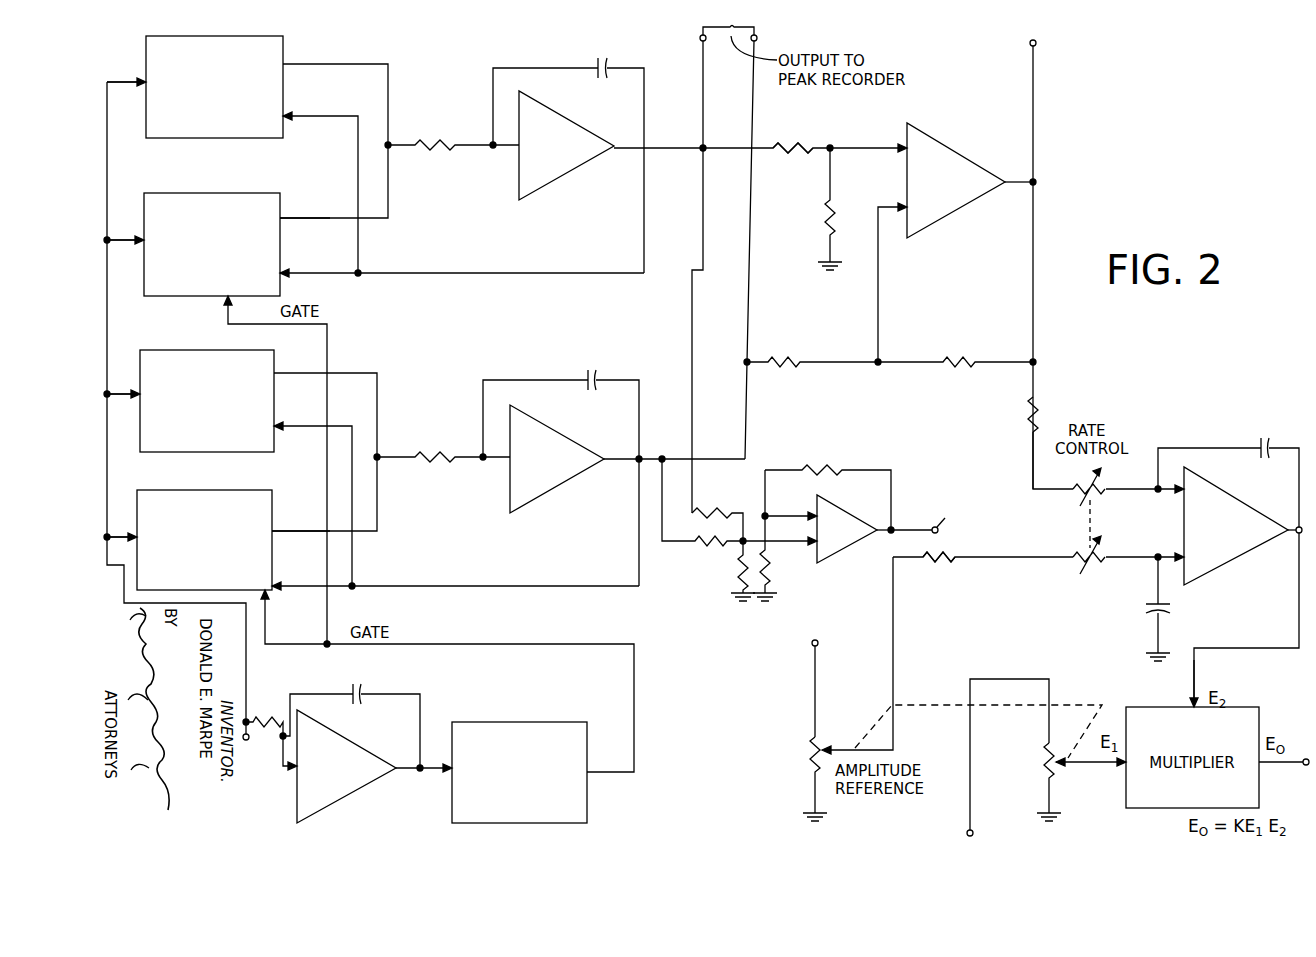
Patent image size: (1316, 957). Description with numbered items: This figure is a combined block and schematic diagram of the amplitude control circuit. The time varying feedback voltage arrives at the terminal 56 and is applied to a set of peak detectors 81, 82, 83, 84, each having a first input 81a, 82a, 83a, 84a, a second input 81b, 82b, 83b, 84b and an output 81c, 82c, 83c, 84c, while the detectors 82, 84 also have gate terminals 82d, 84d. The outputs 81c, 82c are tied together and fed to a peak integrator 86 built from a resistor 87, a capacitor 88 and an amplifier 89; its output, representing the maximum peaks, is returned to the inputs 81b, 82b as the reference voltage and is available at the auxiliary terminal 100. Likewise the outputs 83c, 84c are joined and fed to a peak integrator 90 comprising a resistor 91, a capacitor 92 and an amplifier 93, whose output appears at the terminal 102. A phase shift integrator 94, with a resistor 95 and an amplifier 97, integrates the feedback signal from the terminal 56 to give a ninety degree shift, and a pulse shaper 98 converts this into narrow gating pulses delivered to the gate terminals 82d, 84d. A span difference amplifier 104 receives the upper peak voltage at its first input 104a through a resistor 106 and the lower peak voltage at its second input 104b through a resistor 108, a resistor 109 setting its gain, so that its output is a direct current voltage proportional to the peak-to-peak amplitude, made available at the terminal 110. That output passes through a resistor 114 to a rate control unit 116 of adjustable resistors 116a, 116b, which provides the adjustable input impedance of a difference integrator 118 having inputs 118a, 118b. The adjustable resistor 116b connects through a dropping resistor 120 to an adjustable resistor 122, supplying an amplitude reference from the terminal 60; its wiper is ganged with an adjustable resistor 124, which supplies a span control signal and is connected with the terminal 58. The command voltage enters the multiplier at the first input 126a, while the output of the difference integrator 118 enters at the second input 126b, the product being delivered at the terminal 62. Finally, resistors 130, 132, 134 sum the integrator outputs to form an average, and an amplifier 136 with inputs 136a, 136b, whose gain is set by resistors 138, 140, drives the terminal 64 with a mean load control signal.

The peak detector 81 is at (200, 36).
The first input 81a is at (125, 84).
The second input 81b is at (313, 118).
The output 81c is at (289, 64).
The peak detector 82 is at (218, 193).
The first input 82a is at (124, 242).
The second input 82b is at (318, 275).
The output 82c is at (300, 218).
The gate terminal 82d is at (224, 313).
The peak detector 83 is at (168, 350).
The first input 83a is at (118, 396).
The second input 83b is at (288, 428).
The output 83c is at (290, 375).
The peak detector 84 is at (195, 490).
The first input 84a is at (116, 535).
The second input 84b is at (300, 588).
The output 84c is at (280, 531).
The gate terminal 84d is at (267, 634).
The peak integrator 86 is at (512, 181).
The resistor 87 is at (436, 143).
The capacitor 88 is at (598, 66).
The amplifier 89 is at (577, 129).
The peak integrator 90 is at (503, 494).
The resistor 91 is at (433, 453).
The capacitor 92 is at (590, 378).
The amplifier 93 is at (578, 445).
The phase shift integrator 94 is at (295, 783).
The resistor 95 is at (259, 718).
The amplifier 97 is at (363, 784).
The pulse shaper 98 is at (367, 695).
The terminal 56 is at (245, 741).
The terminal 58 is at (967, 832).
The terminal 60 is at (812, 643).
The output terminal 62 is at (1302, 758).
The terminal 64 is at (925, 514).
The auxiliary terminal 100 is at (700, 38).
The auxiliary terminal 102 is at (757, 38).
The span difference amplifier 104 is at (957, 152).
The first input 104a is at (868, 146).
The second input 104b is at (879, 232).
The resistor 106 is at (797, 152).
The resistor 108 is at (795, 366).
The resistor 109 is at (964, 358).
The auxiliary terminal 110 is at (1036, 43).
The resistor 114 is at (1038, 406).
The rate control unit 116 is at (1076, 521).
The adjustable resistor 116a is at (1078, 482).
The adjustable resistor 116b is at (1095, 565).
The difference integrator 118 is at (1262, 552).
The input 118a is at (1178, 495).
The input 118b is at (1178, 557).
The dropping resistor 120 is at (953, 558).
The adjustable resistor 122 is at (810, 762).
The adjustable resistor 124 is at (1046, 748).
The first input 126a is at (1093, 766).
The second input 126b is at (1190, 700).
The resistor 130 is at (721, 510).
The resistor 132 is at (715, 558).
The resistor 134 is at (735, 575).
The amplifier 136 is at (852, 560).
The first input 136a is at (788, 548).
The second input 136b is at (785, 512).
The resistor 138 is at (827, 462).
The resistor 140 is at (771, 567).